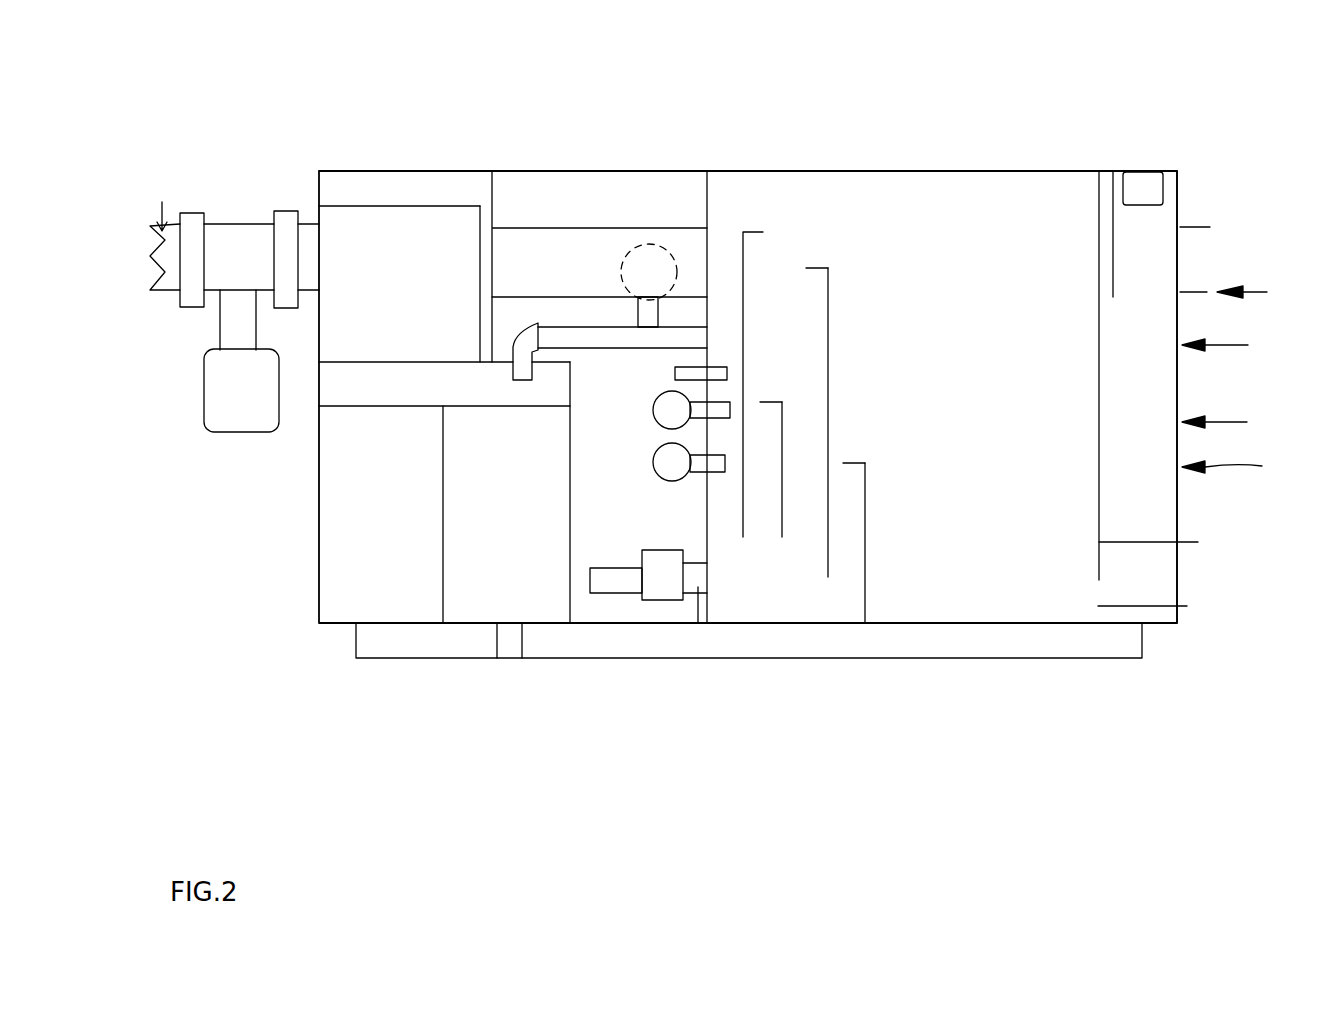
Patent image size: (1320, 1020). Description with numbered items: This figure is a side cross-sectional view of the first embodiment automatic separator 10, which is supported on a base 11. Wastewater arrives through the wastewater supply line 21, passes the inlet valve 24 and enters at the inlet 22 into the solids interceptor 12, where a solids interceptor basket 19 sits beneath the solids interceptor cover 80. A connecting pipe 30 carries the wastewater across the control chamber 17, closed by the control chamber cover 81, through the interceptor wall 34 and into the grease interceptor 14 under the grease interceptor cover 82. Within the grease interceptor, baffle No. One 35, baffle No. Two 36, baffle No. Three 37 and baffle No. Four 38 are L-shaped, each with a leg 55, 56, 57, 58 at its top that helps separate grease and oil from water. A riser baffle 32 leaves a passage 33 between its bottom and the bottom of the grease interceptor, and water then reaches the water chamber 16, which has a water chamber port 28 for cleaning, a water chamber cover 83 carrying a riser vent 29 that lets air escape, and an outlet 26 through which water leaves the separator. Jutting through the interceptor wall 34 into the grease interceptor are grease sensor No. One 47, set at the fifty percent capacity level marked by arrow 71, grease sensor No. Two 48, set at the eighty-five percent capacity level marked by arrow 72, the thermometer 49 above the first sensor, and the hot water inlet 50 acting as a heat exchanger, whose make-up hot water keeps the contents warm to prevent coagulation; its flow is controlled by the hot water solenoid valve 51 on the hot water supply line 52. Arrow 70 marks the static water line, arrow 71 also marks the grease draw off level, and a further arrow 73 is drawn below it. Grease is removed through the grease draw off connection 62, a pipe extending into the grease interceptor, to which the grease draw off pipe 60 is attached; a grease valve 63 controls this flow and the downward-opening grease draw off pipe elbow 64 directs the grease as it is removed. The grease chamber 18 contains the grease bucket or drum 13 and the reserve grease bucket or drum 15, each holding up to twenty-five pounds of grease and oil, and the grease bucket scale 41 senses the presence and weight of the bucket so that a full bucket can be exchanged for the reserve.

The apparatus 10 is at (190, 736).
The base 11 is at (388, 660).
The solids interceptor 12 is at (445, 193).
The grease bucket 13 is at (506, 517).
The grease interceptor 14 is at (962, 263).
The reserve grease bucket 15 is at (381, 491).
The water chamber 16 is at (1127, 477).
The control chamber 17 is at (612, 457).
The grease chamber 18 is at (366, 382).
The solids interceptor basket 19 is at (395, 292).
The wastewater supply line 21 is at (157, 195).
The inlet 22 is at (310, 252).
The inlet valve 24 is at (243, 392).
The outlet 26 is at (1218, 258).
The water chamber port 28 is at (1180, 172).
The riser vent 29 is at (1127, 243).
The connecting pipe 30 is at (492, 170).
The riser baffle 32 is at (1172, 546).
The passage 33 is at (1171, 609).
The interceptor wall 34 is at (675, 460).
The baffle No. One 35 is at (715, 482).
The baffle No. Two 36 is at (782, 555).
The baffle No. Three 37 is at (825, 588).
The baffle No. Four 38 is at (877, 533).
The grease bucket scale 41 is at (508, 644).
The grease sensor No. One 47 is at (668, 407).
The grease sensor No. Two 48 is at (750, 547).
The thermometer 49 is at (670, 370).
The hot water inlet 50 is at (698, 623).
The hot water solenoid valve 51 is at (655, 577).
The hot water supply line 52 is at (600, 568).
The leg of baffle No. One 55 is at (752, 220).
The leg of baffle No. Two 56 is at (773, 393).
The leg of baffle No. Three 57 is at (816, 260).
The leg of baffle No. Four 58 is at (858, 450).
The grease draw off pipe 60 is at (590, 327).
The grease draw off connection 62 is at (697, 340).
The grease valve 63 is at (648, 277).
The grease draw off pipe elbow 64 is at (513, 347).
The arrow indicating static water line 70 is at (1243, 284).
The arrow indicating grease draw off level 71 is at (1244, 341).
The arrow indicating eighty-five percent capacity level 72 is at (1244, 426).
The air flow 73 is at (1244, 478).
The solids interceptor cover 80 is at (360, 170).
The control chamber cover 81 is at (569, 253).
The grease interceptor cover 82 is at (1040, 170).
The water chamber cover 83 is at (1143, 187).